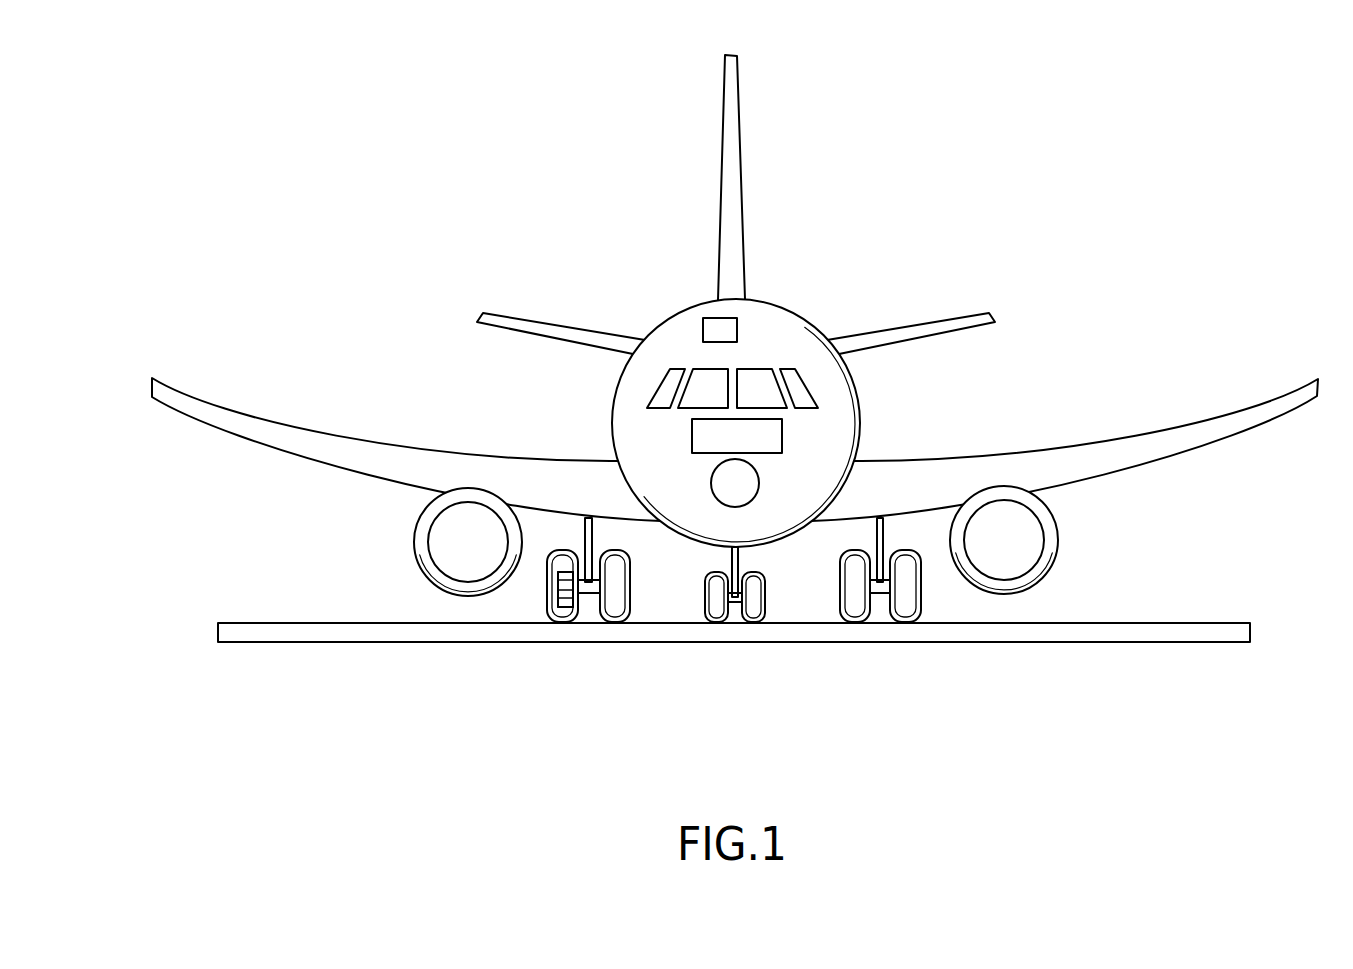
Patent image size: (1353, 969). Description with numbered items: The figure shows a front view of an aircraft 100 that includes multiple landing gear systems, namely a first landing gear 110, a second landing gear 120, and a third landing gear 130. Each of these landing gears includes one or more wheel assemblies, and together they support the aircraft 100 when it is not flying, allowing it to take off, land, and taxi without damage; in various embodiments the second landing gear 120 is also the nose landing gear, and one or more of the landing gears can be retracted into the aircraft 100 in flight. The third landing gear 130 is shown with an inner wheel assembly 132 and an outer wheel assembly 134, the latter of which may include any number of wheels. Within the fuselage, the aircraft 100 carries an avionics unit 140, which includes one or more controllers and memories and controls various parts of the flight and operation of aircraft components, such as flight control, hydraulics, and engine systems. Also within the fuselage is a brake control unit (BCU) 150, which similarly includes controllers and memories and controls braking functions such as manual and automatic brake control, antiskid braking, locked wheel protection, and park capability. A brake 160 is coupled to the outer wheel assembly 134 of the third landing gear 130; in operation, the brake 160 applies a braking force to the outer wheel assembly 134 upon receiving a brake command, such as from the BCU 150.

The aircraft 100 is at (735, 419).
The first landing gear 110 is at (922, 600).
The second landing gear 120 is at (763, 600).
The third landing gear 130 is at (573, 663).
The inner wheel assembly 132 is at (615, 623).
The outer wheel assembly 134 is at (565, 608).
The avionics unit 140 is at (738, 328).
The brake control unit (BCU) 150 is at (782, 436).
The brake 160 is at (563, 608).